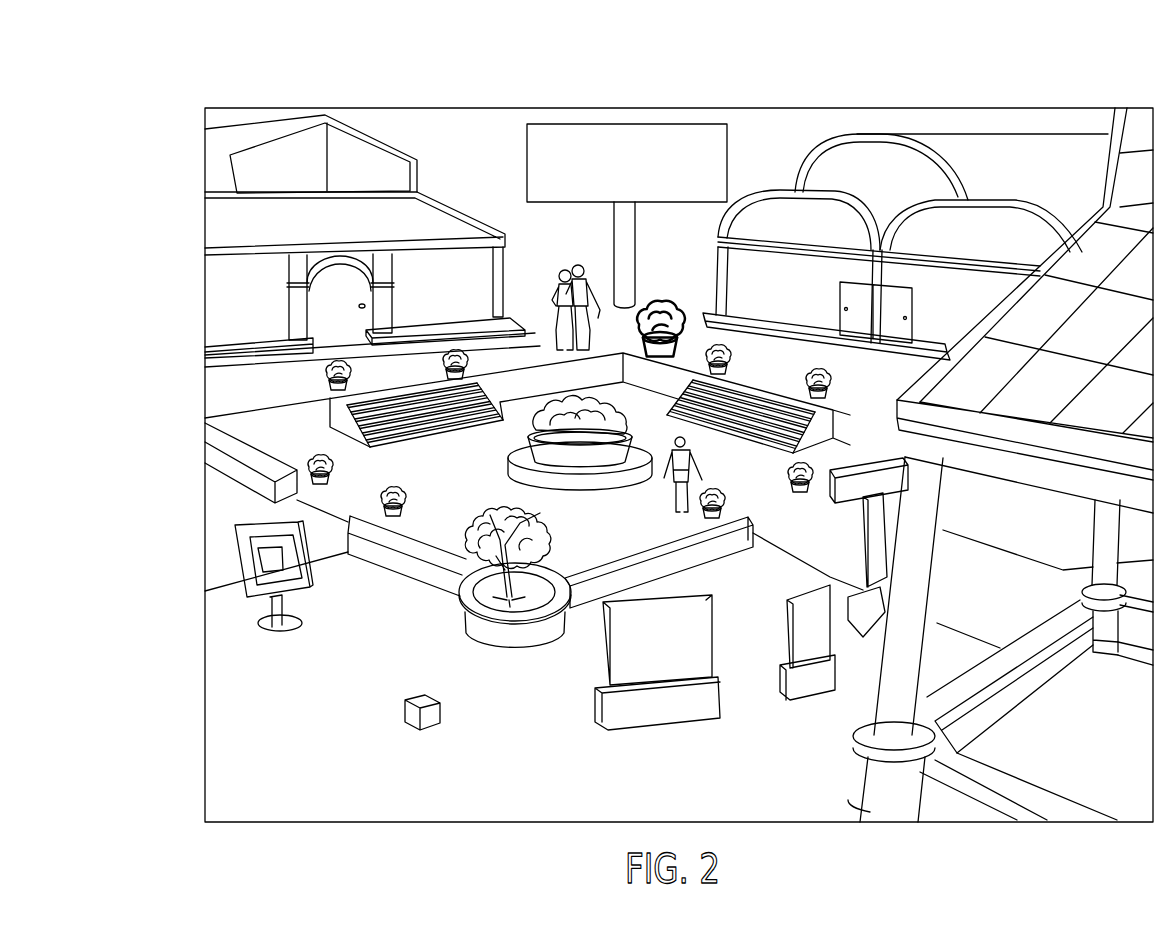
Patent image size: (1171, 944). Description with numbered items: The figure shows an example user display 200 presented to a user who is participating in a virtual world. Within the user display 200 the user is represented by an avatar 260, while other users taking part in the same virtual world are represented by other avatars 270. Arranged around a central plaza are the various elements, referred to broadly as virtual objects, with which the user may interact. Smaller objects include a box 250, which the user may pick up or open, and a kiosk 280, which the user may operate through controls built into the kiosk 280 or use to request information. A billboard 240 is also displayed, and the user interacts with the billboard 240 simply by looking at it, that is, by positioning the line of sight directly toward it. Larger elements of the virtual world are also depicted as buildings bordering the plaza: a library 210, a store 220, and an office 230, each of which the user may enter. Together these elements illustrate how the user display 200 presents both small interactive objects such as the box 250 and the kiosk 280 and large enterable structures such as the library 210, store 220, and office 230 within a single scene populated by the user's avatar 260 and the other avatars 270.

The user display 200 is at (222, 80).
The library 210 is at (385, 143).
The store 220 is at (838, 192).
The office 230 is at (999, 197).
The billboard 240 is at (727, 150).
The box 250 is at (378, 712).
The avatar 260 is at (692, 448).
The other avatars 270 is at (547, 270).
The kiosk 280 is at (322, 572).